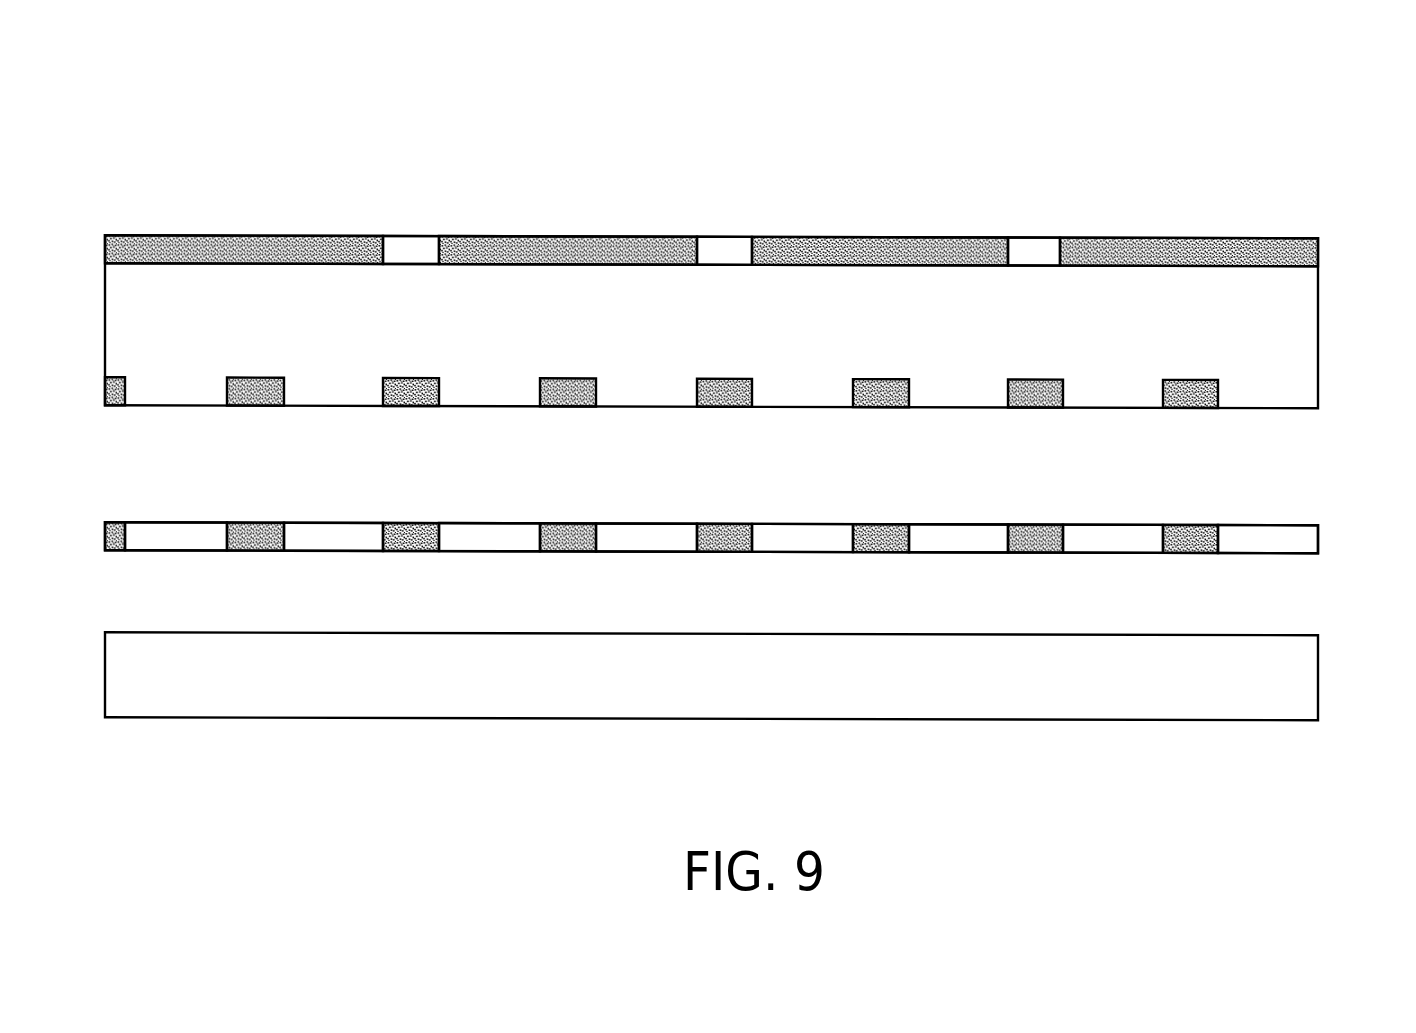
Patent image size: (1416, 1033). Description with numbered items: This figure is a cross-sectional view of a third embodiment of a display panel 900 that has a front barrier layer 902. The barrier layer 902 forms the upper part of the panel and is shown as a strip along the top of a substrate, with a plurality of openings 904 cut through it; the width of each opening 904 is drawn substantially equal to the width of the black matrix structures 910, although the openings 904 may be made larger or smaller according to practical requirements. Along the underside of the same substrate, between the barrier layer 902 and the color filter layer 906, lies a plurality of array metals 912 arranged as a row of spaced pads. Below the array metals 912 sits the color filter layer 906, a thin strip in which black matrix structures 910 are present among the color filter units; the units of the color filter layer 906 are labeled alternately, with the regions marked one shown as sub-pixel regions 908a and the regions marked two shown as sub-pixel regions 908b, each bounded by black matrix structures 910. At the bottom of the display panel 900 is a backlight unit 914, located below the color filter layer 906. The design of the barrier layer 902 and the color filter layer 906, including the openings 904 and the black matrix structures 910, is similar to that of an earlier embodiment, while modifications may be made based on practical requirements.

The display panel 900 is at (1397, 69).
The barrier layer 902 is at (1320, 248).
The openings 904 is at (1018, 246).
The color filter layer 906 is at (1320, 538).
The first sub-pixel region 908a is at (1137, 520).
The second sub-pixel region 908b is at (976, 520).
The black matrix structures 910 is at (869, 520).
The array metals 912 is at (1186, 376).
The backlight unit 914 is at (1320, 683).